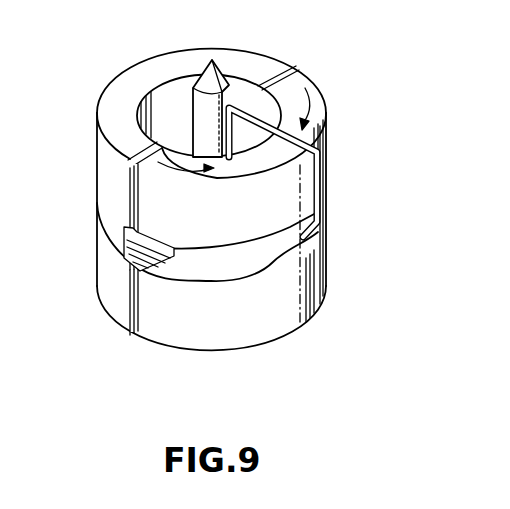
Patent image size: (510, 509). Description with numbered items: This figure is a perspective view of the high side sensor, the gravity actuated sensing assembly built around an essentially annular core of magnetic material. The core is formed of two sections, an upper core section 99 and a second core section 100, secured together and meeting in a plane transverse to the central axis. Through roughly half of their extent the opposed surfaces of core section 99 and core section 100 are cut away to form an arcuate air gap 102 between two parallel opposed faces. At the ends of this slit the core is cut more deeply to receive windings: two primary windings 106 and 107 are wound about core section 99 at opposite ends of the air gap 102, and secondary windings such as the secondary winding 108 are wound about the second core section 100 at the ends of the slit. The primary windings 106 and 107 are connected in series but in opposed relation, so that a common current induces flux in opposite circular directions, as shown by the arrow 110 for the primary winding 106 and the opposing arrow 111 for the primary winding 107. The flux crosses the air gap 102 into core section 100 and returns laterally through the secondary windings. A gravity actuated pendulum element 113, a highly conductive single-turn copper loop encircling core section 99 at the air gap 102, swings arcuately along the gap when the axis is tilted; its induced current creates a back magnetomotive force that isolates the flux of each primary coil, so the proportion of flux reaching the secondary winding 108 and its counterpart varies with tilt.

The core section 99 is at (138, 75).
The core section 100 is at (190, 334).
The arcuate air gap 102 is at (236, 262).
The primary winding 106 is at (130, 192).
The primary winding 107 is at (283, 63).
The secondary winding 108 is at (129, 326).
The arrow 110 is at (176, 164).
The arrow 111 is at (306, 103).
The gravity actuated pendulum element 113 is at (320, 194).